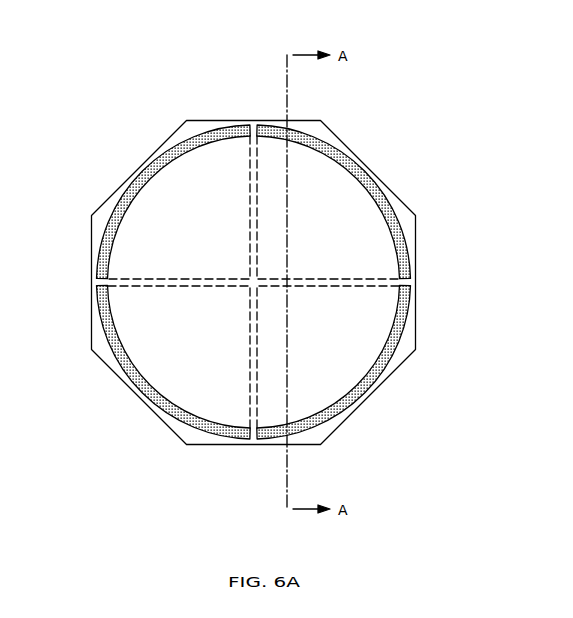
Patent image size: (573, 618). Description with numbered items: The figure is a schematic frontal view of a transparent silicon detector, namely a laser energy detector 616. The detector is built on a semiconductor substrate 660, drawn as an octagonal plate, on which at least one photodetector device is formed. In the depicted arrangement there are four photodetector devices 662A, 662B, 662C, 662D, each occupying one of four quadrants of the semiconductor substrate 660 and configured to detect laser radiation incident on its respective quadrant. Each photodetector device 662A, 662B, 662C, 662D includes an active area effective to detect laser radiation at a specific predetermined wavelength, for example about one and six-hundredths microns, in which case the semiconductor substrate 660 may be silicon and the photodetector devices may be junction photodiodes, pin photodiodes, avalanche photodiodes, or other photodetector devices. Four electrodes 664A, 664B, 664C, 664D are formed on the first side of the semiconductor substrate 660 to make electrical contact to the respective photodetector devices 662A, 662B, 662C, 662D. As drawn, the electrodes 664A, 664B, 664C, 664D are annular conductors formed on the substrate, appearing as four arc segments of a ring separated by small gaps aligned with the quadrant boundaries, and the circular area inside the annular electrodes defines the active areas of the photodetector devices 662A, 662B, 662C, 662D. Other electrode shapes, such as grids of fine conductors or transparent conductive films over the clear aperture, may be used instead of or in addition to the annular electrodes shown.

The laser energy detector 616 is at (112, 55).
The semiconductor substrate 660 is at (320, 120).
The photodetector device 662A is at (330, 208).
The photodetector device 662B is at (330, 358).
The photodetector device 662C is at (177, 358).
The photodetector device 662D is at (177, 207).
The electrode 664A is at (392, 207).
The electrode 664B is at (393, 357).
The electrode 664C is at (178, 418).
The electrode 664D is at (193, 135).